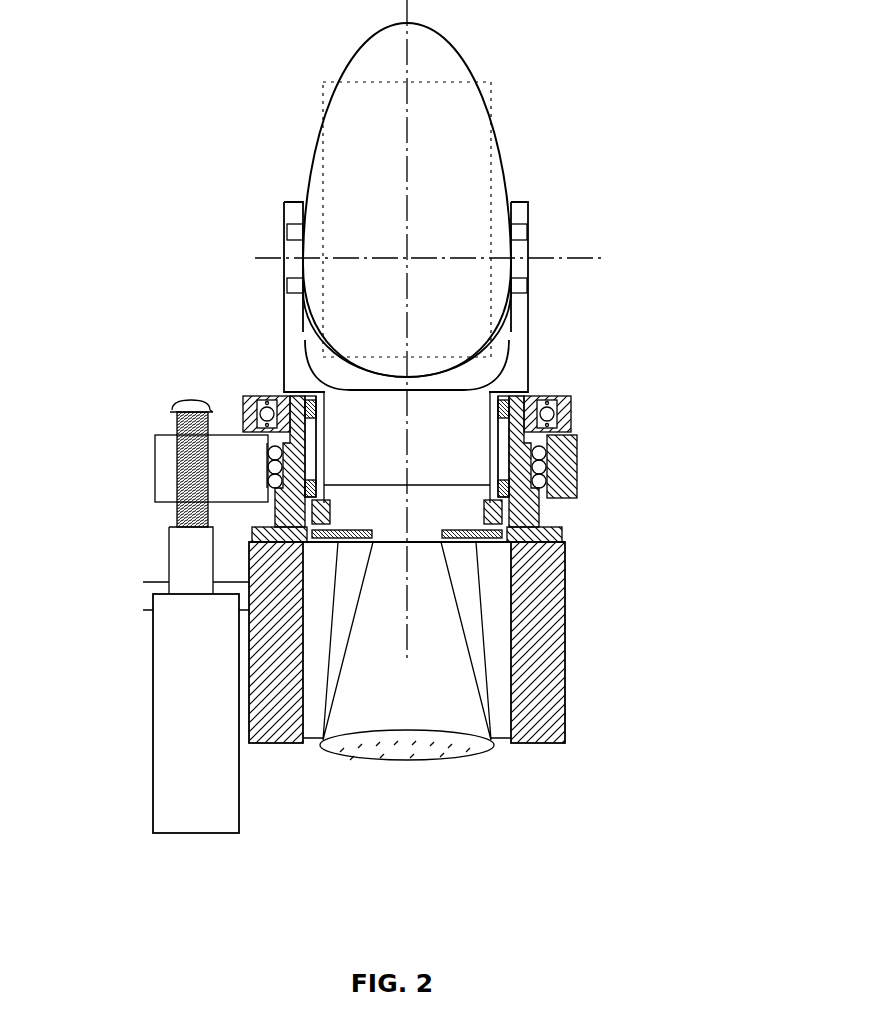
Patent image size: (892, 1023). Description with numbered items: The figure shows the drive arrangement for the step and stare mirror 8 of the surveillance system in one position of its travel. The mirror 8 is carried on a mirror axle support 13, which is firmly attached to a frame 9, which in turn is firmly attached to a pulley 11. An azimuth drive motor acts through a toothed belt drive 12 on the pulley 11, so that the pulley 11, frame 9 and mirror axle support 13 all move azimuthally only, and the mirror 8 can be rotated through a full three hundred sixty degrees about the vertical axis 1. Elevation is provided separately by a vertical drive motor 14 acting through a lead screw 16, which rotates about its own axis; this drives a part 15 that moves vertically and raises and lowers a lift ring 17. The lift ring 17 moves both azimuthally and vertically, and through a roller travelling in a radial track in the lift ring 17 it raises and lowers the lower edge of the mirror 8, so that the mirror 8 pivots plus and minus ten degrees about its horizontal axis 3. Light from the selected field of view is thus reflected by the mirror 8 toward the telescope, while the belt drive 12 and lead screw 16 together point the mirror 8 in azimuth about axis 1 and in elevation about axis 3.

The axis 1 is at (413, 417).
The axis 3 is at (468, 258).
The step and stare mirror 8 is at (470, 140).
The frame 9 is at (546, 466).
The pulley 11 is at (507, 512).
The toothed belt drive 12 is at (275, 516).
The mirror axle support 13 is at (462, 440).
The vertical drive motor 14 is at (153, 767).
The vertically movable part 15 is at (223, 443).
The lead screw 16 is at (177, 410).
The lift ring 17 is at (577, 393).